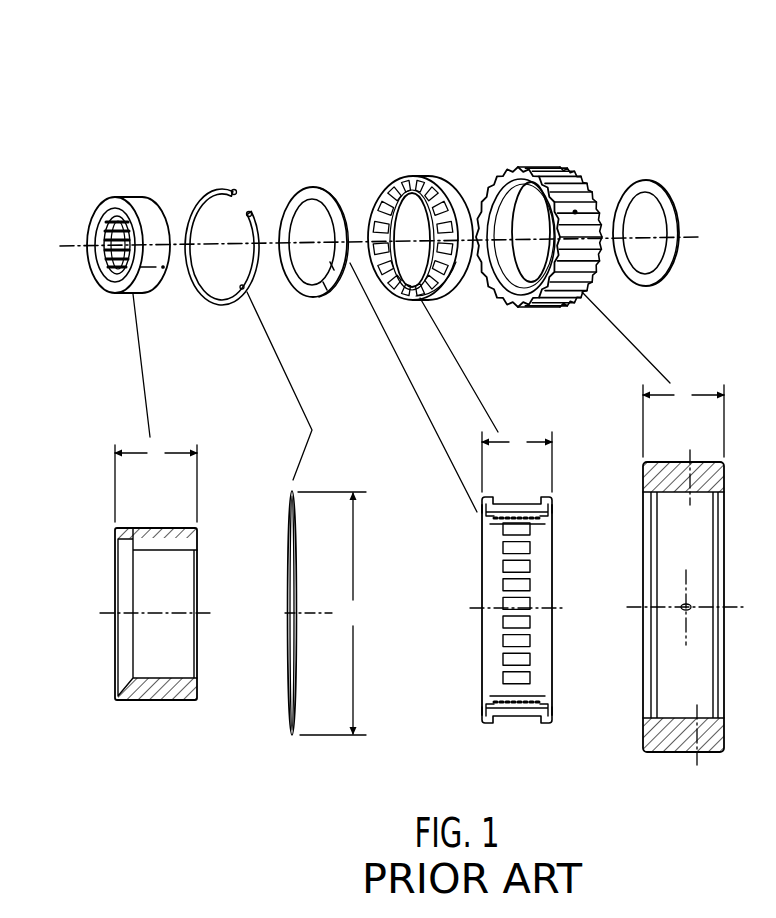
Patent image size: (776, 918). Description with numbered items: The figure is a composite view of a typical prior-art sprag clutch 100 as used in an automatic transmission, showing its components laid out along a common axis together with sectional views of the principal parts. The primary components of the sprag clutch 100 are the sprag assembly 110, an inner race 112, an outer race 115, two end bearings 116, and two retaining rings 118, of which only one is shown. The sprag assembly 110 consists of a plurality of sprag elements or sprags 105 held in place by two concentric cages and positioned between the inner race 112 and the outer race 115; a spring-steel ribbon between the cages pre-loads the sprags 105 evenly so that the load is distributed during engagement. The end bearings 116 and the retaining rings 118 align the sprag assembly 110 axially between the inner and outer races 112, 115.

The sprag clutch 100 is at (413, 112).
The sprags 105 is at (457, 258).
The sprag assembly 110 is at (434, 171).
The inner race 112 is at (105, 198).
The outer race 115 is at (572, 172).
The end bearings 116 is at (312, 188).
The retaining rings 118 is at (212, 193).